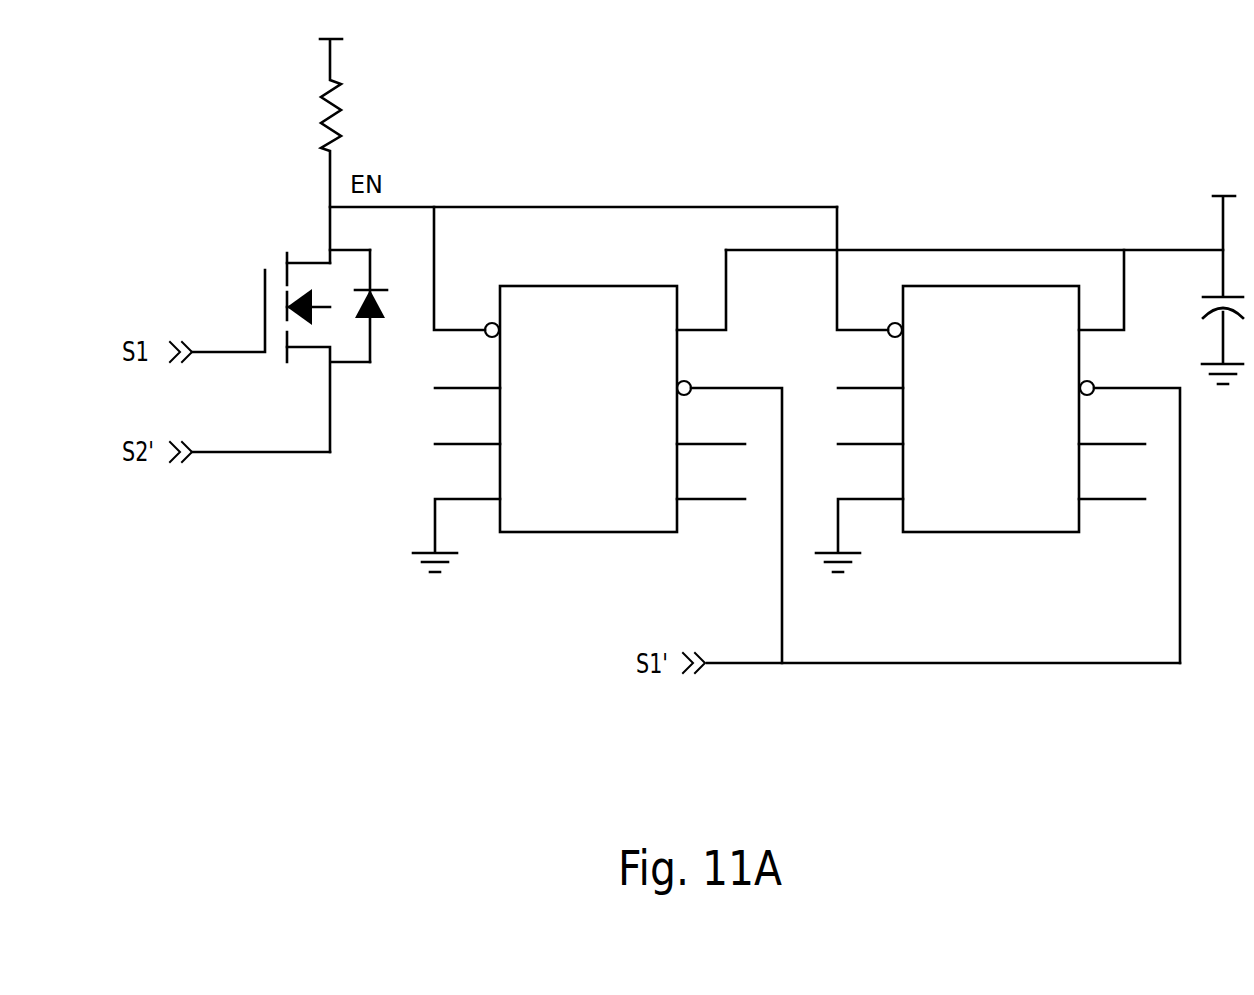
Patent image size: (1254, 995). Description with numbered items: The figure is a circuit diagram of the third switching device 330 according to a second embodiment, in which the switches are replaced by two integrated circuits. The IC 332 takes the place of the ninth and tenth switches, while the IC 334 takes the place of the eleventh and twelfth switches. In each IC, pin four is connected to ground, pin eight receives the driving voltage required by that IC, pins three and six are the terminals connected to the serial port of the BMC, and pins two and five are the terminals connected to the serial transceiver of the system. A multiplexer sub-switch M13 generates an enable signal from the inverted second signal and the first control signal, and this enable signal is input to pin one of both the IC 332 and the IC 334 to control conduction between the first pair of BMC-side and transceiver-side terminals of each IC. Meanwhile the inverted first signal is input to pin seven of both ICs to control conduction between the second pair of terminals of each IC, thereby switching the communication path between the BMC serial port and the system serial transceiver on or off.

The third switching device 330 is at (1190, 789).
The IC 332 is at (593, 538).
The IC 334 is at (984, 539).
The multiplexer sub-switch M13 is at (265, 252).